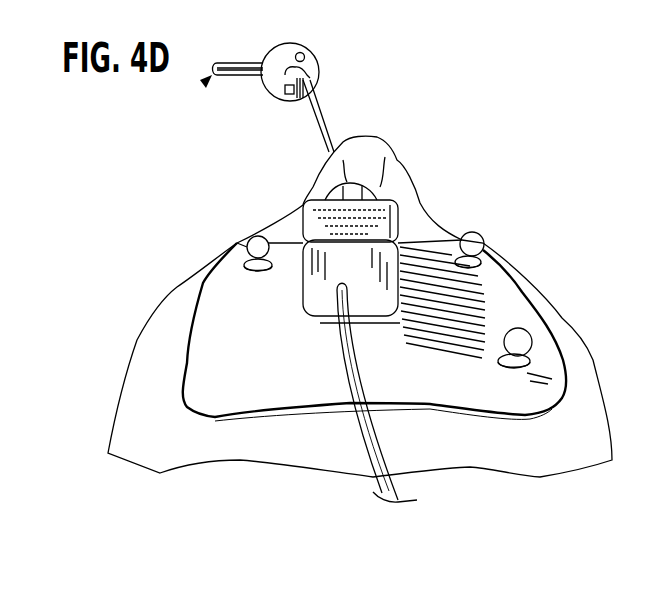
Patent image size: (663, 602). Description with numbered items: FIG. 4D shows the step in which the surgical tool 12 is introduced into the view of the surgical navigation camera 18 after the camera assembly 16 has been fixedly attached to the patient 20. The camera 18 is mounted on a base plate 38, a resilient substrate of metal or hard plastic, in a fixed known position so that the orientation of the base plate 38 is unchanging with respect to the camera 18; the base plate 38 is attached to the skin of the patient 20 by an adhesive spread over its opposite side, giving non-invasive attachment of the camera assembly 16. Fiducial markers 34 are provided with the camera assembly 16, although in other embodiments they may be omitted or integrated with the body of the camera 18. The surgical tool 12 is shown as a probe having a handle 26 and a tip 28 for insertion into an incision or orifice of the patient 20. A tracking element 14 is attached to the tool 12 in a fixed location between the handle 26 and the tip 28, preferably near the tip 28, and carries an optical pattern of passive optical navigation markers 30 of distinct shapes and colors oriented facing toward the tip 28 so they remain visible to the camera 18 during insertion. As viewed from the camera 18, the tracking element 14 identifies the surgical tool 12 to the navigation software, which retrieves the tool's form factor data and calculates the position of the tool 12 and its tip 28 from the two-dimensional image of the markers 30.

The surgical tool 12 is at (205, 80).
The tracking element 14 is at (312, 63).
The camera assembly 16 is at (228, 392).
The surgical navigation camera 18 is at (380, 217).
The patient 20 is at (197, 268).
The handle 26 is at (233, 63).
The tip 28 is at (325, 117).
The optical navigation markers 30 is at (290, 90).
The fiducial markers 34 is at (247, 243).
The base plate 38 is at (435, 393).